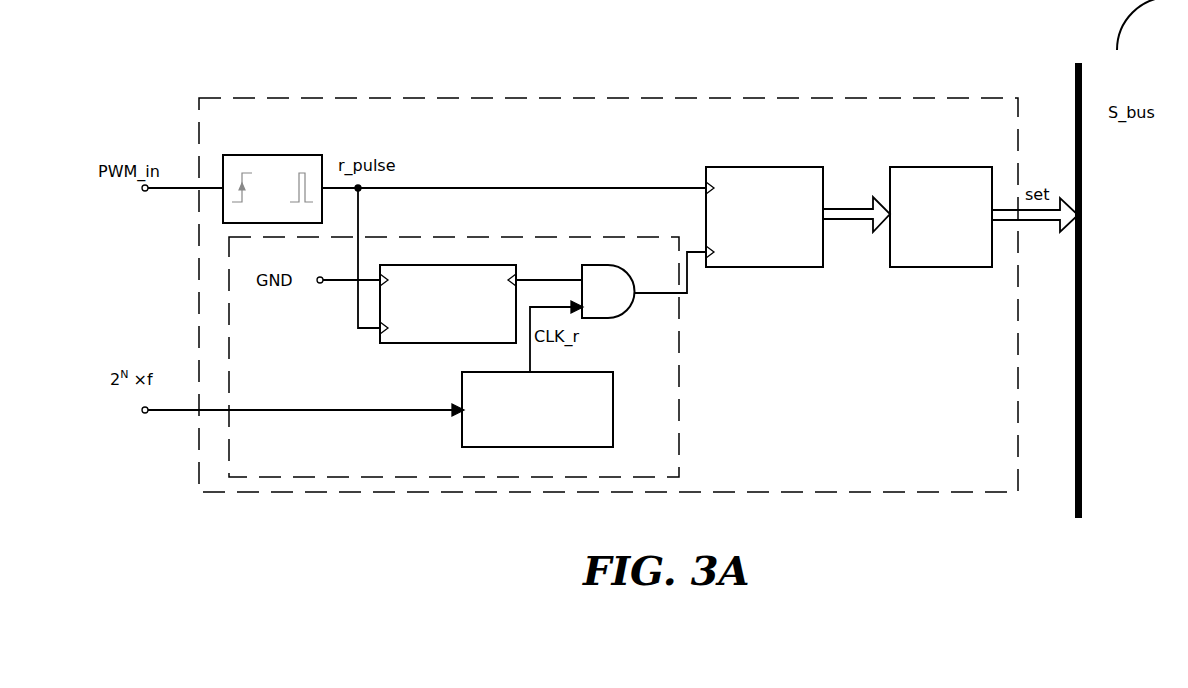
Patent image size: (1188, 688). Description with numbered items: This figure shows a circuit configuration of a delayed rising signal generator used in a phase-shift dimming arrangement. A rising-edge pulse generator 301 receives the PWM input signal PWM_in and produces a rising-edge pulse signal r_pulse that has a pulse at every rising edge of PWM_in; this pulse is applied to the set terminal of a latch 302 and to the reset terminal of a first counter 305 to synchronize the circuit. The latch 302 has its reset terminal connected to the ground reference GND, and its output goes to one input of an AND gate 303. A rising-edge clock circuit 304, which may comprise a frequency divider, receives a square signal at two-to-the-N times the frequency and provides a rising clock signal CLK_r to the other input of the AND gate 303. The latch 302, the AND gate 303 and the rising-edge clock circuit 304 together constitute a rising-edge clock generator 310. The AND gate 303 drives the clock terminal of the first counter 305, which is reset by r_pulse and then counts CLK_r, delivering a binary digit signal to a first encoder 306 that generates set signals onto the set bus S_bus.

The rising-edge pulse generator 301 is at (298, 153).
The latch 302 is at (448, 265).
The AND gate 303 is at (587, 318).
The rising-edge clock circuit 304 is at (565, 447).
The first counter 305 is at (763, 167).
The first encoder 306 is at (928, 167).
The rising-edge clock generator 310 is at (679, 388).